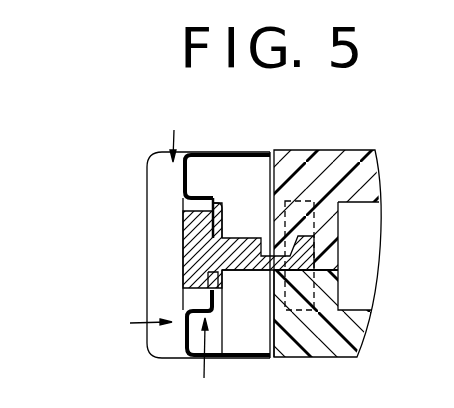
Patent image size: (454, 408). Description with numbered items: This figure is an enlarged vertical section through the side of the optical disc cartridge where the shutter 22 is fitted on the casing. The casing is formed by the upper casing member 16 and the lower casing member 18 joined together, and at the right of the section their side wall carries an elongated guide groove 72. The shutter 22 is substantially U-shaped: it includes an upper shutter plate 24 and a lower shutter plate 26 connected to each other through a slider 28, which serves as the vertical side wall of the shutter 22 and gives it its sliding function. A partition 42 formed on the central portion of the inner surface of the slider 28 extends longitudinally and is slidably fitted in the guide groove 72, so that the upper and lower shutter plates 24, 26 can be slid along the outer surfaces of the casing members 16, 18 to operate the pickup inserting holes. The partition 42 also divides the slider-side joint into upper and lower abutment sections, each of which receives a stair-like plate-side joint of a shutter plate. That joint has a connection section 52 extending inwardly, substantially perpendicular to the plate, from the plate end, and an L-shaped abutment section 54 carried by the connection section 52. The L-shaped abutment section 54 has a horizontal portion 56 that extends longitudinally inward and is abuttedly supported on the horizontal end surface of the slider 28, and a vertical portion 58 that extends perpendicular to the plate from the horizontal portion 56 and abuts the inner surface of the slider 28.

The upper casing member 16 is at (347, 335).
The lower casing member 18 is at (368, 178).
The shutter 22 is at (177, 254).
The upper shutter plate 24 is at (135, 332).
The lower shutter plate 26 is at (171, 131).
The slider 28 is at (182, 258).
The partition 42 is at (252, 270).
The connection section 52 is at (150, 187).
The L-shaped abutment section 54 is at (228, 348).
The horizontal portion 56 is at (205, 198).
The vertical portion 58 is at (221, 214).
The guide groove 72 is at (305, 238).